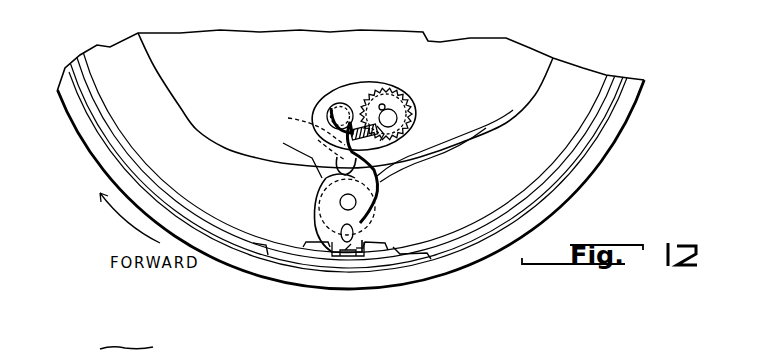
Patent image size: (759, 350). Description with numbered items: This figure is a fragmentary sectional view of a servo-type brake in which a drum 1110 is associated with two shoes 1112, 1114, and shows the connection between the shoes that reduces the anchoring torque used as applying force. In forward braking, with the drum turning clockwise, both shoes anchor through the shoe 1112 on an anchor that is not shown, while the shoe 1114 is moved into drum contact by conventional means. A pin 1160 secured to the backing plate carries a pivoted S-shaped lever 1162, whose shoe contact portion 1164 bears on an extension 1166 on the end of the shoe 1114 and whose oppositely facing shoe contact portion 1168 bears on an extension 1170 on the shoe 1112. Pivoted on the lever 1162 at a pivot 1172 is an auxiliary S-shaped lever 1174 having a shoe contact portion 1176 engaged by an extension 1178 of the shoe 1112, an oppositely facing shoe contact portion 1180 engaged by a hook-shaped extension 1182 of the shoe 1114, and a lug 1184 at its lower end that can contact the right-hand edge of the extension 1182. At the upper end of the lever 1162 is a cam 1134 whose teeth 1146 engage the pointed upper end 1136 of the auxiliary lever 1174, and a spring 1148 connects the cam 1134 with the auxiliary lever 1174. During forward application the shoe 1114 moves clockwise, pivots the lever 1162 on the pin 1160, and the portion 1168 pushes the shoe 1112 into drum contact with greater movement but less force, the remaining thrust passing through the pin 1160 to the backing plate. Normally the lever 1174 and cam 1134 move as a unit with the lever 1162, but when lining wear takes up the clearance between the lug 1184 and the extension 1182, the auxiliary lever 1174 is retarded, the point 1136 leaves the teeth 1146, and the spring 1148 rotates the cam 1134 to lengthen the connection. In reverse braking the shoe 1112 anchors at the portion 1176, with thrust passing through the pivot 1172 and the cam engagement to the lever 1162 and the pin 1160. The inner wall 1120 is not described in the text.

The drum 1110 is at (636, 101).
The shoe 1112 is at (108, 96).
The shoe 1114 is at (572, 137).
The inner wall surface 1120 is at (345, 100).
The cam 1134 is at (397, 107).
The pointed upper end 1136 is at (383, 98).
The teeth 1146 is at (411, 112).
The spring 1148 is at (413, 133).
The pin 1160 is at (345, 107).
The S-shaped lever 1162 is at (330, 100).
The shoe contact portion 1164 is at (299, 134).
The extension 1166 is at (395, 150).
The shoe contact portion 1168 is at (371, 228).
The extension 1170 is at (316, 238).
The pivot 1172 is at (356, 207).
The auxiliary S-shaped lever 1174 is at (328, 211).
The shoe contact portion 1176 is at (350, 152).
The extension 1178 is at (288, 153).
The shoe contact portion 1180 is at (333, 244).
The extension 1182 is at (350, 250).
The lug 1184 is at (363, 250).